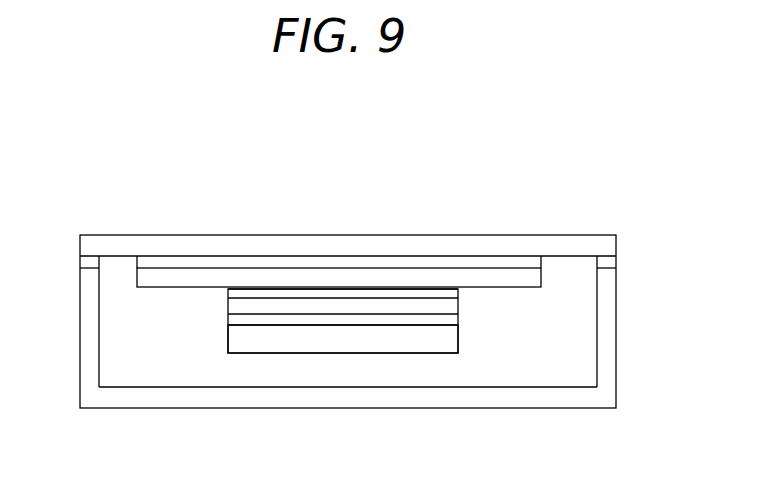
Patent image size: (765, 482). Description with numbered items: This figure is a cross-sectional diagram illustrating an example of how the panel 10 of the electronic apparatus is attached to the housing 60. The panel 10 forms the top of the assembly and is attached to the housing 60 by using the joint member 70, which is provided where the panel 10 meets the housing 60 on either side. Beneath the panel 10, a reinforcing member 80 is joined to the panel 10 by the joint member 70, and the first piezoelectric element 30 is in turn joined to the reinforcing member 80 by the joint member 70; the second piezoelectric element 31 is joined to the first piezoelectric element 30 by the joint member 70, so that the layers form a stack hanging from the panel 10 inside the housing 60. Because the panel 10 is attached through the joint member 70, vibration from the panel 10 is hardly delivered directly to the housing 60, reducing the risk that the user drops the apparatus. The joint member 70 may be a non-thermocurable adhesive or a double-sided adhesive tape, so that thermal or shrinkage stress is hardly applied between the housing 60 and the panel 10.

The panel 10 is at (342, 245).
The housing 60 is at (340, 399).
The reinforcing member 80 is at (522, 283).
The joint member 70 is at (84, 262).
The first piezoelectric element 30 is at (232, 304).
The second piezoelectric element 31 is at (400, 345).